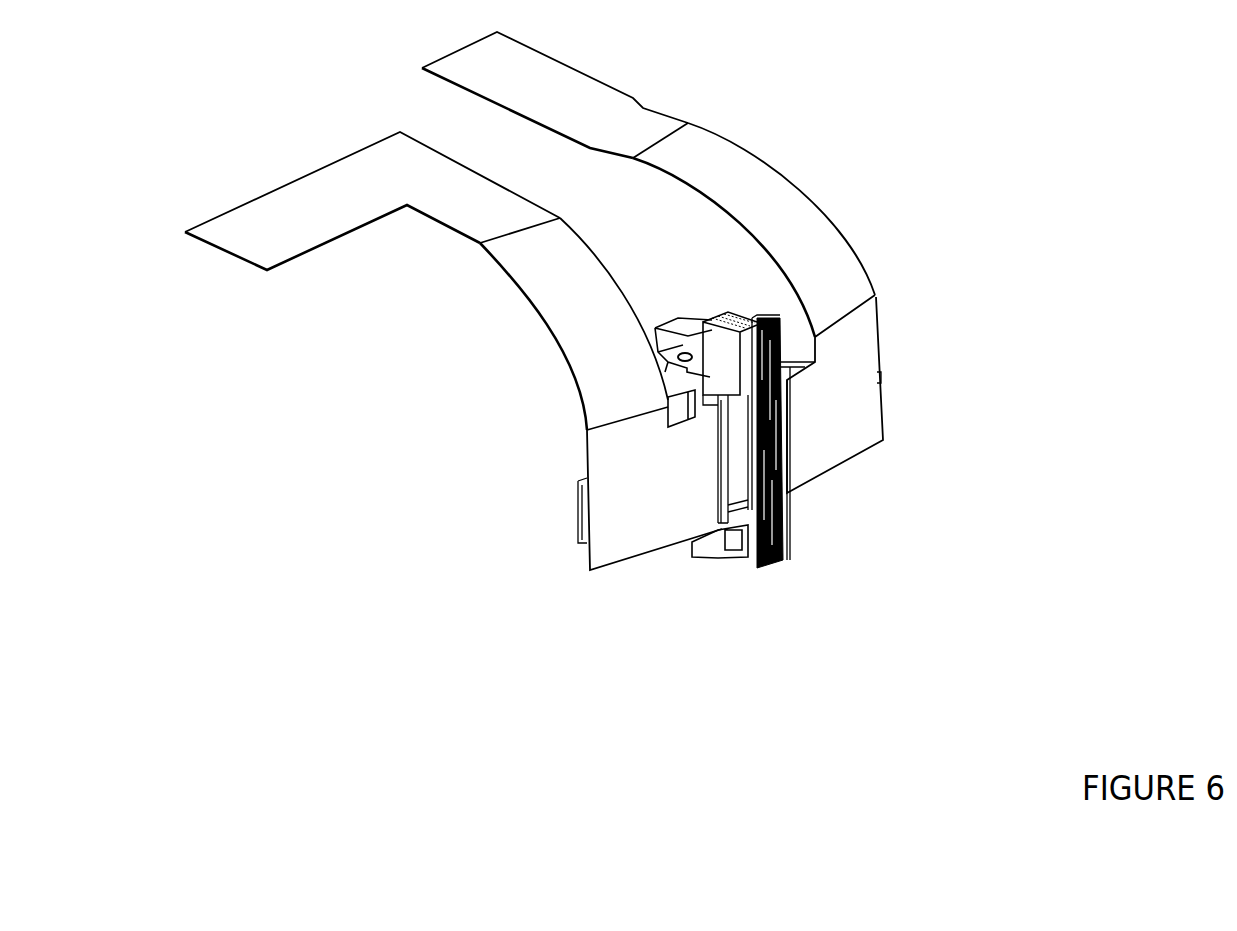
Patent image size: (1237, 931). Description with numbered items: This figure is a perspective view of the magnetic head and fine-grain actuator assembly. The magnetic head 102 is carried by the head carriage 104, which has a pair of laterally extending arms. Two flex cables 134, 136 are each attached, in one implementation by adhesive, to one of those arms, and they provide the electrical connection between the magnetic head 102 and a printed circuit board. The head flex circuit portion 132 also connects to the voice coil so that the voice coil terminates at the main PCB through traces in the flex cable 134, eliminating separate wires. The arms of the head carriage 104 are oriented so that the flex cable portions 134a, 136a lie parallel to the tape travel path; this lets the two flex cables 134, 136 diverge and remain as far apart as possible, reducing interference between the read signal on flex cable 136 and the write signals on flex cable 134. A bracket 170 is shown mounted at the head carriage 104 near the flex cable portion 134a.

The magnetic head 102 is at (803, 532).
The head carriage 104 is at (705, 298).
The head flex circuit portion 132 is at (678, 397).
The flex cable 134 is at (395, 191).
The flex cable portion 134a is at (611, 500).
The flex cable 136 is at (556, 102).
The flex cable portion 136a is at (806, 427).
The mounting bracket 170 is at (670, 330).